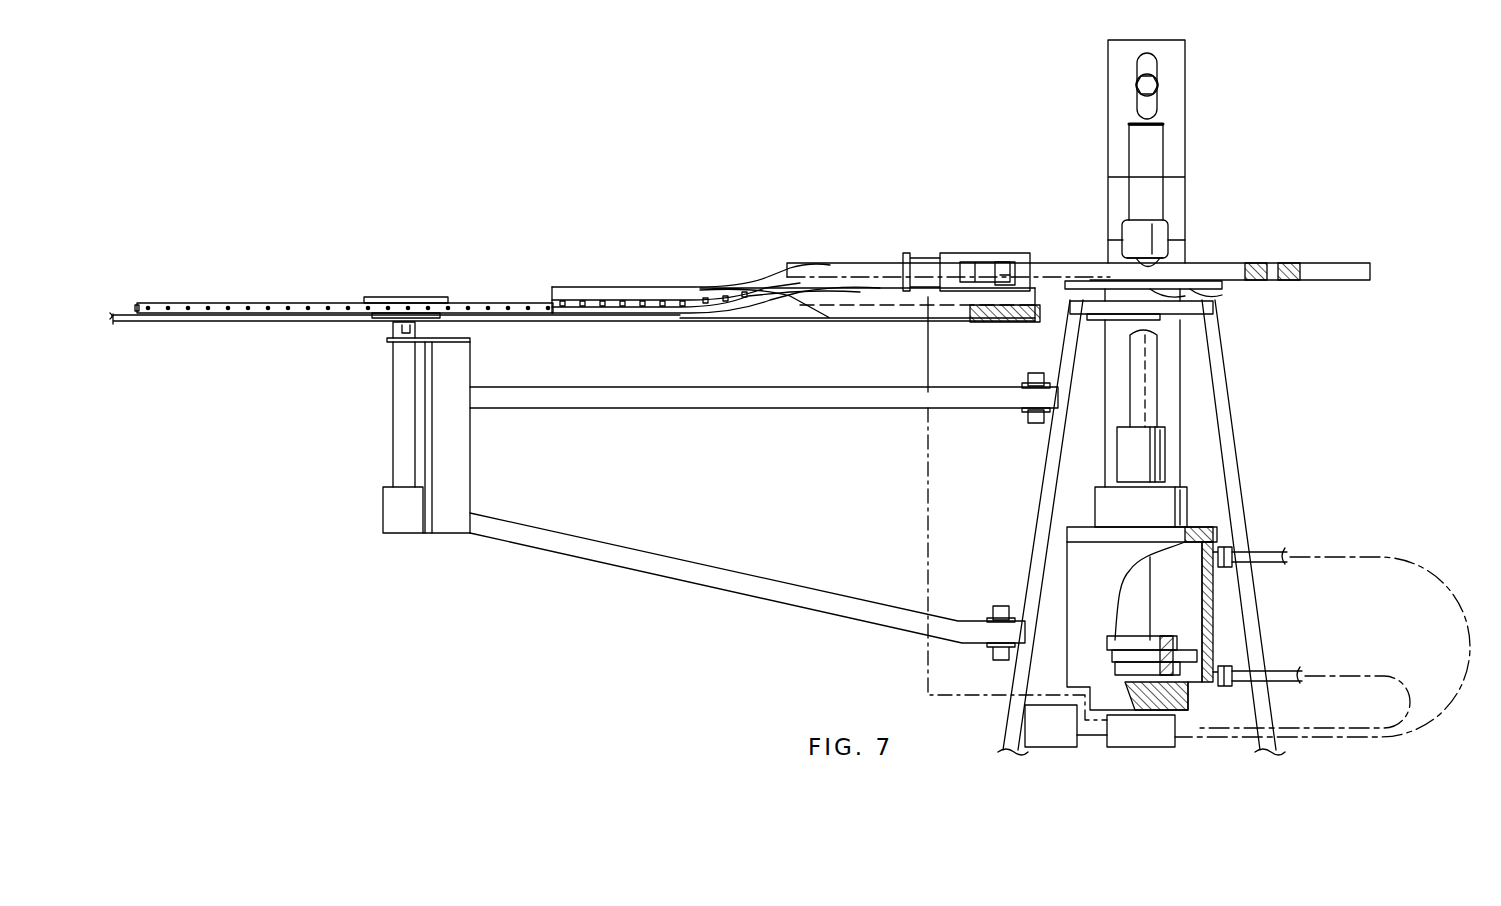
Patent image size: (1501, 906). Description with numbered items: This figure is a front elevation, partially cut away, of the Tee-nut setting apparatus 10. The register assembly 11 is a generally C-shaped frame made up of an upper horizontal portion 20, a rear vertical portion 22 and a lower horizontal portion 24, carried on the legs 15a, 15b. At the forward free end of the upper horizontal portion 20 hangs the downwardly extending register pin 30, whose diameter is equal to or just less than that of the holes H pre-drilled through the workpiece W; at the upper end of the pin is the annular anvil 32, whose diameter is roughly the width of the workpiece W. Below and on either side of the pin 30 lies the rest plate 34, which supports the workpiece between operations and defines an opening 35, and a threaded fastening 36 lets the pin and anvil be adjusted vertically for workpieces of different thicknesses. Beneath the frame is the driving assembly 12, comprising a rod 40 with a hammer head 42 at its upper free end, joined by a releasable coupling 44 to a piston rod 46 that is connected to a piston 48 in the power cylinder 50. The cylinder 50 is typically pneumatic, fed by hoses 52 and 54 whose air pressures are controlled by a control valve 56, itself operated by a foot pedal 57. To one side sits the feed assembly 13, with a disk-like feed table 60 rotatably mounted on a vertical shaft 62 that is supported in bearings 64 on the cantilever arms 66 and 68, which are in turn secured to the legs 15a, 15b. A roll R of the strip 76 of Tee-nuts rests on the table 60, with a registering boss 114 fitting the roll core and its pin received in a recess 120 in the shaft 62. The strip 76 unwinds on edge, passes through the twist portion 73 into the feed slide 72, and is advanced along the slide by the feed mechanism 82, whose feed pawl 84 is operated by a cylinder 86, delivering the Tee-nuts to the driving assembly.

The web guiding apparatus 10 is at (1268, 300).
The register assembly 11 is at (1191, 185).
The driving assembly 12 is at (1172, 405).
The feed assembly 13 is at (540, 201).
The leg 15a is at (1048, 470).
The leg 15b is at (1240, 522).
The upper horizontal portion 20 is at (1187, 110).
The rear vertical portion 22 is at (1115, 240).
The lower horizontal portion 24 is at (1075, 530).
The register pin 30 is at (1172, 263).
The annular anvil 32 is at (1122, 238).
The rest plate 34 is at (1208, 293).
The opening 35 is at (1178, 294).
The threaded fastening 36 is at (1160, 84).
The rod 40 is at (1135, 380).
The hammer head 42 is at (1150, 325).
The releasable coupling 44 is at (1175, 464).
The piston rod 46 is at (1205, 640).
The piston 48 is at (1205, 655).
The power cylinder 50 is at (1215, 576).
The hose 52 is at (1287, 688).
The hose 54 is at (1283, 556).
The control valve 56 is at (1160, 742).
The foot pedal 57 is at (1048, 742).
The feed table 60 is at (222, 318).
The vertical shaft 62 is at (403, 445).
The bearing 64 is at (392, 338).
The cantilever arm 66 is at (668, 395).
The cantilever arm 68 is at (678, 568).
The feed slide 72 is at (570, 290).
The twist portion 73 is at (751, 252).
The strip of Tee-nuts 76 is at (493, 301).
The feed mechanism 82 is at (952, 250).
The feed pawl 84 is at (1010, 258).
The cylinder 86 is at (930, 262).
The registering boss 114 is at (432, 286).
The recess 120 is at (412, 330).
The roll R is at (238, 297).
The hole H is at (1270, 261).
The workpiece W is at (1338, 262).